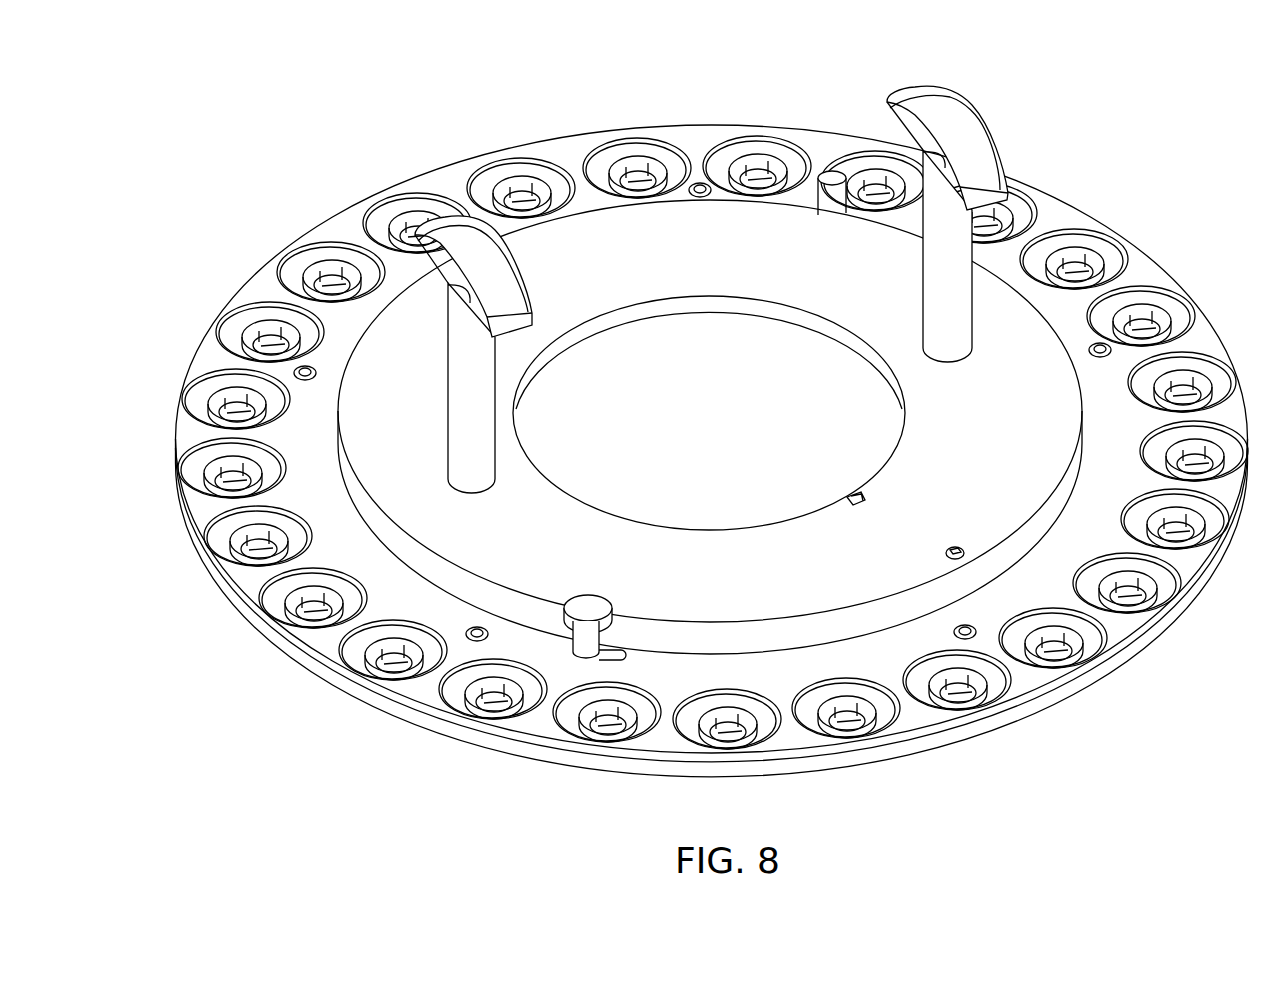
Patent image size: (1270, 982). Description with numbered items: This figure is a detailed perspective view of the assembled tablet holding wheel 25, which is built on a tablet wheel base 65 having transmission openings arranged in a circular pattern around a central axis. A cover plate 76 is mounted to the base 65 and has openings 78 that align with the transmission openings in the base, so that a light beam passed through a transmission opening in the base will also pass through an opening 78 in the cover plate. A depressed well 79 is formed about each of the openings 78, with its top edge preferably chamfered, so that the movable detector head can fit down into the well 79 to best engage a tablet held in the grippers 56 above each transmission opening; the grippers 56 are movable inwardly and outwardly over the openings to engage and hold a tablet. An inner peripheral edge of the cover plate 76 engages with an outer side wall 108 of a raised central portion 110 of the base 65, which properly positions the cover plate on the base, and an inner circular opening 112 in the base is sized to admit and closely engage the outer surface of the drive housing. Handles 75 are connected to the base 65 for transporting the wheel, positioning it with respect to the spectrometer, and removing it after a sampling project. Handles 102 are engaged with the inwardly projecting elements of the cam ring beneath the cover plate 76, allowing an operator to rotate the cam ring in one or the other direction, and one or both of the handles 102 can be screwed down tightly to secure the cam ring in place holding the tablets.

The tablet holding wheel 25 is at (343, 222).
The grippers 56 is at (493, 180).
The tablet wheel base 65 is at (1045, 358).
The handles 75 is at (445, 363).
The cover plate 76 is at (320, 640).
The openings 78 is at (218, 392).
The depressed well 79 is at (652, 150).
The handles 102 is at (818, 172).
The outer side wall 108 is at (960, 578).
The raised central portion 110 is at (845, 547).
The inner circular opening 112 is at (583, 325).